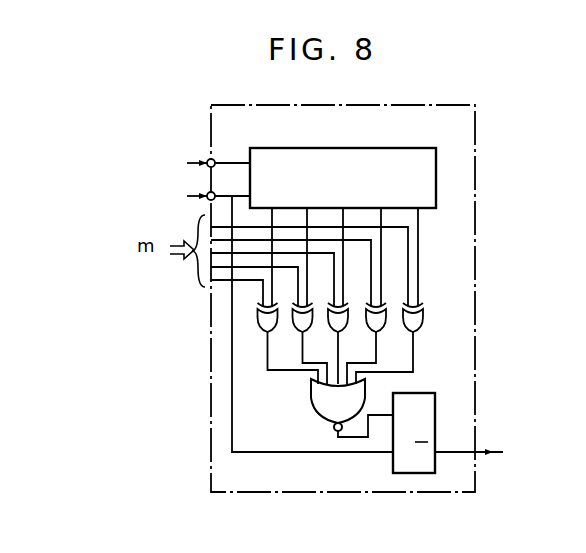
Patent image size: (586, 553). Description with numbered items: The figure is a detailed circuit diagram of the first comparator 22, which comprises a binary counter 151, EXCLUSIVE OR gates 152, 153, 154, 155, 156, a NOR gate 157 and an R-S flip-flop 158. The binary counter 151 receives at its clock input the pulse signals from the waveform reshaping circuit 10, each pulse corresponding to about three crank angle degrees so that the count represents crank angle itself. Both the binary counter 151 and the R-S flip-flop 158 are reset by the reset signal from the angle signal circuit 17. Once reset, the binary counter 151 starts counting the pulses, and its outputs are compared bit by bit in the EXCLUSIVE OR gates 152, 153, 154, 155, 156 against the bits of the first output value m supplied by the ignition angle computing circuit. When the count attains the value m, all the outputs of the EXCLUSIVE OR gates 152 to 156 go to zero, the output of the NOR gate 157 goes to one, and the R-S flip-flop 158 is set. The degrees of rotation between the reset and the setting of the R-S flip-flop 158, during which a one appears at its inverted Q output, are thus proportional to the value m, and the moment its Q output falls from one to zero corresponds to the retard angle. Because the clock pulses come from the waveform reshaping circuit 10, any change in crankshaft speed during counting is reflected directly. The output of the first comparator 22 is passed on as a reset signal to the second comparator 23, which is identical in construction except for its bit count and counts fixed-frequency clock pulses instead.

The waveform reshaping circuit 10 is at (206, 163).
The angle signal circuit 17 is at (206, 195).
The first comparator 22 is at (476, 170).
The second comparator 23 is at (482, 454).
The binary counter 151 is at (352, 147).
The EXCLUSIVE OR gate 152 is at (258, 316).
The EXCLUSIVE OR gate 153 is at (293, 316).
The EXCLUSIVE OR gate 154 is at (348, 318).
The EXCLUSIVE OR gate 155 is at (386, 318).
The EXCLUSIVE OR gate 156 is at (423, 318).
The NOR gate 157 is at (318, 410).
The R-S flip-flop 158 is at (414, 392).